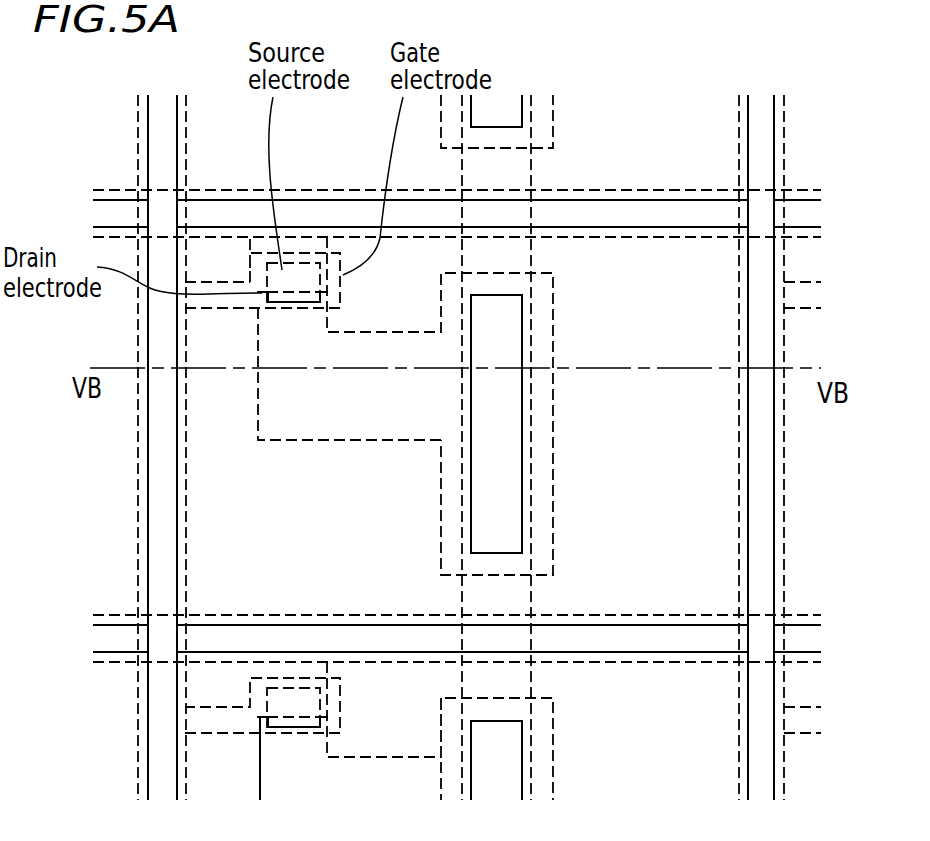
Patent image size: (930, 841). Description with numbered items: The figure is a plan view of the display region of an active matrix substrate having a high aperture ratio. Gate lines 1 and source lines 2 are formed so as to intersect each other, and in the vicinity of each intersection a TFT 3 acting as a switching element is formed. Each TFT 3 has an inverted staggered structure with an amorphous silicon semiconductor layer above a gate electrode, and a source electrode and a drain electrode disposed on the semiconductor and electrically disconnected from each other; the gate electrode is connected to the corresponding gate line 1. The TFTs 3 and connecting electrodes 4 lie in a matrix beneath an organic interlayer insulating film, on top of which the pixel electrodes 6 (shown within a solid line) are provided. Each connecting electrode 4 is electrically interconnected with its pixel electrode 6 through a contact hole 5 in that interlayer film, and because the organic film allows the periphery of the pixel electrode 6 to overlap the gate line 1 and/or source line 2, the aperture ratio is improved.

The gate line 1 is at (138, 150).
The source line 2 is at (217, 190).
The TFT 3 is at (296, 272).
The connecting electrode 4 is at (277, 427).
The contact hole 5 is at (498, 310).
The pixel electrode 6 is at (210, 395).